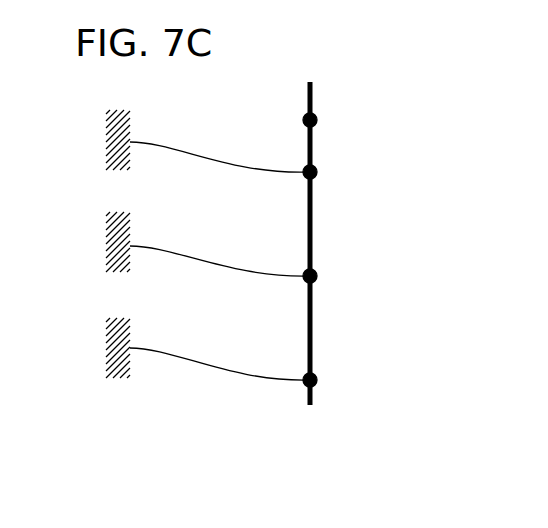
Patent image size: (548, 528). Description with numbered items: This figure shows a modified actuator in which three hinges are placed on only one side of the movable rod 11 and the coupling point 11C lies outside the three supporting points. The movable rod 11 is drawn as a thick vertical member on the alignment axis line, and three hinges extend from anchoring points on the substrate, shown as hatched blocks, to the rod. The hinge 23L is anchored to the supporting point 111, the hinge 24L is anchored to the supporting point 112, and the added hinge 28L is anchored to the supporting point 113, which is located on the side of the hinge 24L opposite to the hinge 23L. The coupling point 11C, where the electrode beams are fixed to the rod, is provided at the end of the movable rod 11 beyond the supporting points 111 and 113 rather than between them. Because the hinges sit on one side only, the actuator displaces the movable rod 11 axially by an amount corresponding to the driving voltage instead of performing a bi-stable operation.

The movable rod 11 is at (313, 213).
The coupling point 11C is at (318, 118).
The supporting point 111 is at (305, 176).
The supporting point 112 is at (318, 274).
The supporting point 113 is at (318, 378).
The hinge 23L is at (200, 151).
The hinge 24L is at (220, 263).
The hinge 28L is at (208, 366).